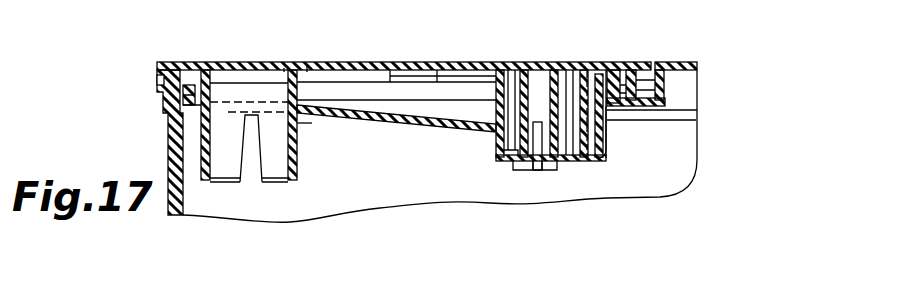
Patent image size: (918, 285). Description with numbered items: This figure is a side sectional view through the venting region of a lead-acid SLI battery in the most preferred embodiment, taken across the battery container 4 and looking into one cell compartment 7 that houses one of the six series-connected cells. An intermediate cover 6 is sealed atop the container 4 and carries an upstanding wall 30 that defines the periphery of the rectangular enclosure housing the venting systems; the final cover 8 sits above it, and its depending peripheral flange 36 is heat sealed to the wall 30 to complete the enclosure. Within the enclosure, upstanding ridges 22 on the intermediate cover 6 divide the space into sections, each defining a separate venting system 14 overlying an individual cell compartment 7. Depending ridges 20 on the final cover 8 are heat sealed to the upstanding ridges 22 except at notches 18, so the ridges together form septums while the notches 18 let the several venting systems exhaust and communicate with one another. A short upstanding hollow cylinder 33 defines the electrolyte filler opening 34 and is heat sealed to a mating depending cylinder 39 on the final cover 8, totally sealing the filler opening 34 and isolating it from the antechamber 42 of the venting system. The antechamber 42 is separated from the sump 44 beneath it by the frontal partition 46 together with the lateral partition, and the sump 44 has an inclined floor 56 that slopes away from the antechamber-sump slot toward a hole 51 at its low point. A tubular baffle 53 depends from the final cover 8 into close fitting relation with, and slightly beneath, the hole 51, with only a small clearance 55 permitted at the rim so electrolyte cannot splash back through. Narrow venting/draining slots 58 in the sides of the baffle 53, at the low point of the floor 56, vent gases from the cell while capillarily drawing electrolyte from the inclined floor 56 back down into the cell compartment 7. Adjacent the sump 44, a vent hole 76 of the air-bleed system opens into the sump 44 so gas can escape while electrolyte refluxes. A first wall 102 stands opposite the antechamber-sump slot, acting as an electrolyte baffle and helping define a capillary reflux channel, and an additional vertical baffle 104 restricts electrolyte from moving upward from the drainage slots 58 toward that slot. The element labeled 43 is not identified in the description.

The battery container 4 is at (177, 162).
The intermediate cover 6 is at (665, 66).
The cell compartment 7 is at (390, 198).
The final cover 8 is at (617, 78).
The venting system 14 is at (329, 80).
The notch 18 is at (400, 74).
The depending ridge 20 is at (348, 88).
The upstanding ridge 22 is at (373, 92).
The upstanding wall 30 is at (191, 100).
The upstanding hollow cylinder 33 is at (307, 66).
The filler opening 34 is at (293, 152).
The depending peripheral flange 36 is at (186, 84).
The depending cylinder 39 is at (284, 68).
The antechamber 42 is at (424, 84).
The spring plate 43 is at (408, 120).
The sump 44 is at (513, 78).
The frontal partition 46 is at (497, 78).
The hole 51 is at (532, 170).
The tubular baffle 53 is at (540, 78).
The clearance 55 is at (556, 170).
The inclined floor 56 is at (508, 150).
The venting/draining slot 58 is at (538, 138).
The vent hole 76 is at (592, 80).
The first wall 102 is at (613, 150).
The vertical baffle 104 is at (584, 165).